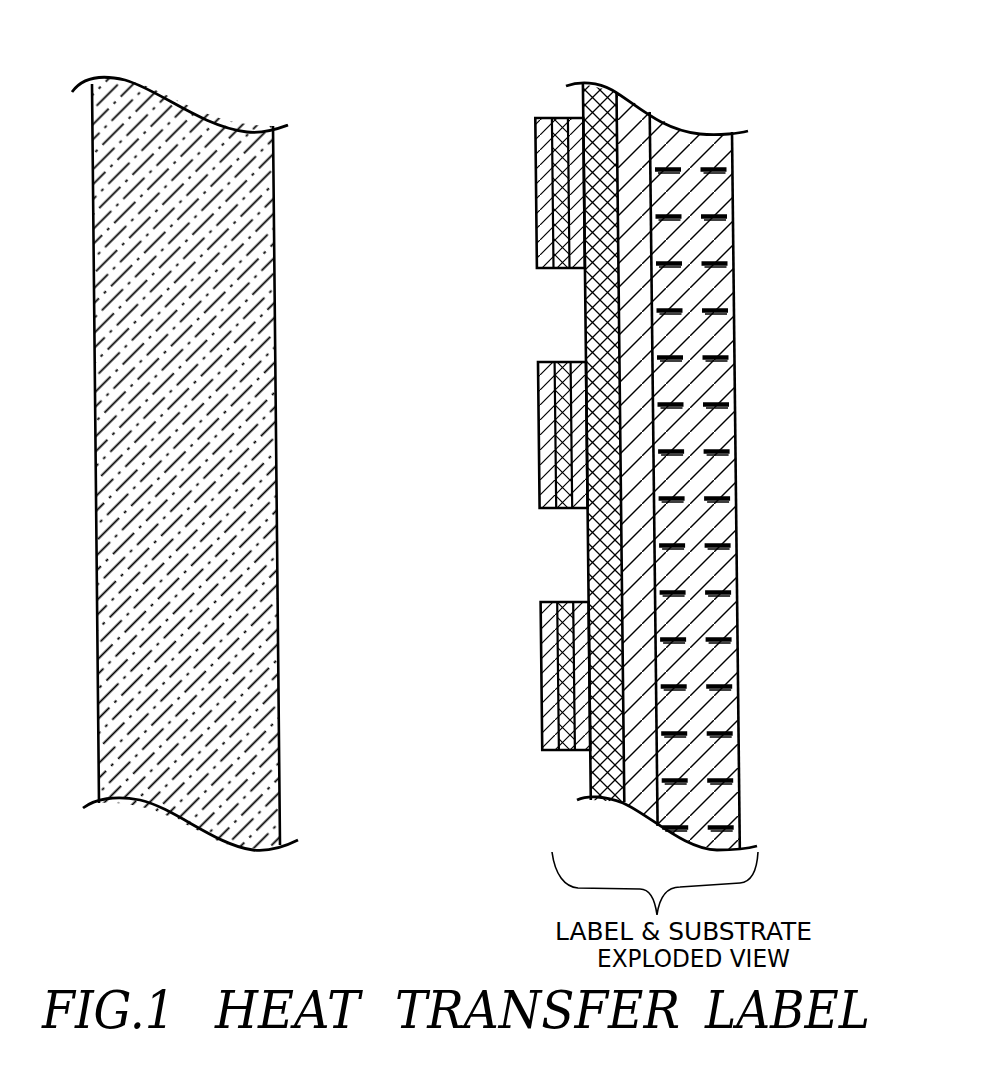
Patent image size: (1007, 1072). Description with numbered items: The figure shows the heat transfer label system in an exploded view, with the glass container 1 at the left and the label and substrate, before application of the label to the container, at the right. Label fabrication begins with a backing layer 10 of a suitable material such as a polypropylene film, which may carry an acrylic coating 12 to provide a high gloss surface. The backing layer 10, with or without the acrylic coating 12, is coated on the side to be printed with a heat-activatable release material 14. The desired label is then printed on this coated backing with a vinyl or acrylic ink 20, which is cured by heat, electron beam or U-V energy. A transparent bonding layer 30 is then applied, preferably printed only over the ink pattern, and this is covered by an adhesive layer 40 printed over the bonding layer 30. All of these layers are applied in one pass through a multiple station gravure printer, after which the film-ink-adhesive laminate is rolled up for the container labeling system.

The glass container 1 is at (183, 697).
The backing layer 10 is at (705, 403).
The acrylic coating 12 is at (633, 117).
The release material 14 is at (598, 107).
The ink 20 is at (569, 116).
The bonding layer 30 is at (568, 742).
The adhesive layer 40 is at (577, 128).